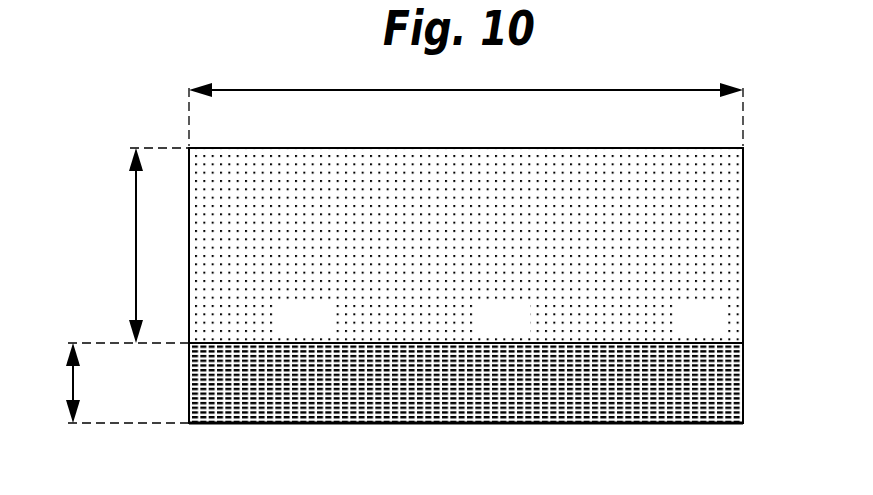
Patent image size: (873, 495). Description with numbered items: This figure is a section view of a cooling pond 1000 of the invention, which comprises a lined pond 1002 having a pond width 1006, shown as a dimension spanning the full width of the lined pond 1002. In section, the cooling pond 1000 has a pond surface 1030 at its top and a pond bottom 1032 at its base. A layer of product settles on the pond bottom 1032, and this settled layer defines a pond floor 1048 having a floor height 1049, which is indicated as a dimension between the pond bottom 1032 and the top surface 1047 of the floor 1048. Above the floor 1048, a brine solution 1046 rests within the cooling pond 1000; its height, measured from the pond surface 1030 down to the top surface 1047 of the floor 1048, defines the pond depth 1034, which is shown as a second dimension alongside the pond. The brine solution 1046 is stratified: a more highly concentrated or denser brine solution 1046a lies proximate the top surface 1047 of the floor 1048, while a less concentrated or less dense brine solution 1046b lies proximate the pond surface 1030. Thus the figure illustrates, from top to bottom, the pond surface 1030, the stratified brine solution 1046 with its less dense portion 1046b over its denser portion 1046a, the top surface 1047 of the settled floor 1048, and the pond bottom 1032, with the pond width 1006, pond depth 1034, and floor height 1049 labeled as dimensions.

The cooling pond 1000 is at (758, 229).
The lined pond 1002 is at (743, 297).
The pond width 1006 is at (325, 88).
The pond surface 1030 is at (450, 147).
The pond bottom 1032 is at (567, 423).
The pond depth 1034 is at (135, 265).
The brine solution 1046 is at (215, 218).
The denser brine solution 1046a is at (683, 322).
The less dense brine solution 1046b is at (727, 187).
The top surface of floor 1047 is at (682, 340).
The pond floor 1048 is at (288, 400).
The floor height 1049 is at (73, 385).